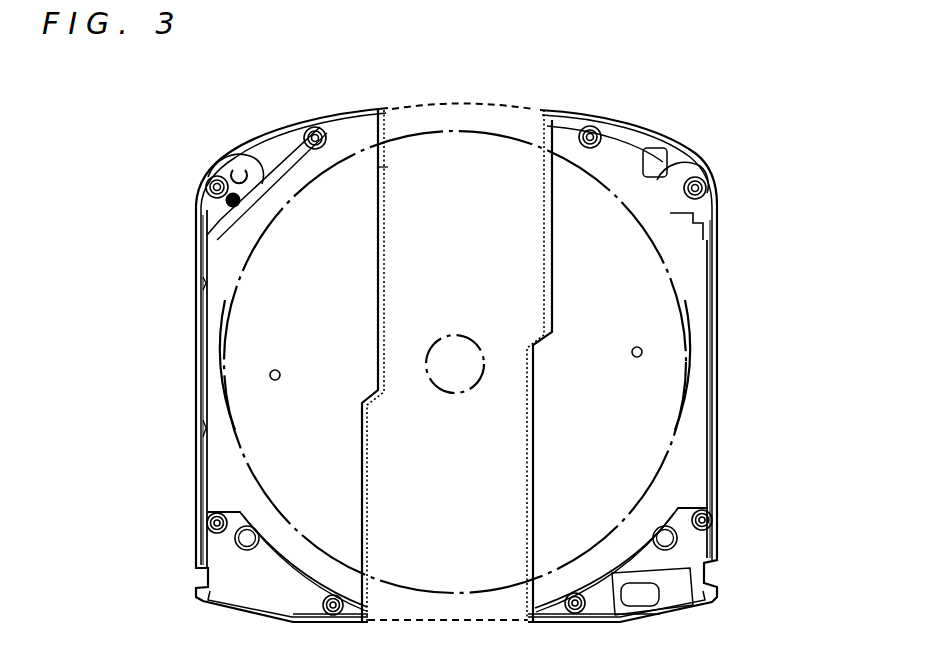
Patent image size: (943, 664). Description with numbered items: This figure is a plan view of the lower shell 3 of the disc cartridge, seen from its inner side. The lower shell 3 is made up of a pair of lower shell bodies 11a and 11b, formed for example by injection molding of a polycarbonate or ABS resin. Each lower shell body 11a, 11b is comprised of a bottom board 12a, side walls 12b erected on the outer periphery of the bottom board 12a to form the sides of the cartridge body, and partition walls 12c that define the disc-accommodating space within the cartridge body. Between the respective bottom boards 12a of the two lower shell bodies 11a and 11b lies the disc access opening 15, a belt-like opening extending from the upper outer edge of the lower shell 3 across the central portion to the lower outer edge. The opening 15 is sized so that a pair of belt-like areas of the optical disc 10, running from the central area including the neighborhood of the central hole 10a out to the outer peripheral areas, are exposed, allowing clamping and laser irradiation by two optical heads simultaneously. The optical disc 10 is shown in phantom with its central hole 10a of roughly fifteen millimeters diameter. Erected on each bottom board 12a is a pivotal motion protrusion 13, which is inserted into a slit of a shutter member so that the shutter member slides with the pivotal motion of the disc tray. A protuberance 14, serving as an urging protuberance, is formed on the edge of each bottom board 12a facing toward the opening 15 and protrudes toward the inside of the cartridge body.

The lower shell 3 is at (456, 89).
The optical disc 10 is at (675, 287).
The central hole 10a is at (456, 350).
The lower shell body 11a is at (243, 128).
The lower shell body 11b is at (699, 143).
The bottom board 12a is at (243, 348).
The side wall 12b is at (207, 212).
The partition wall 12c is at (263, 167).
The pivotal motion protrusion 13 is at (278, 371).
The protuberance 14 is at (542, 172).
The disc access opening 15 is at (431, 178).